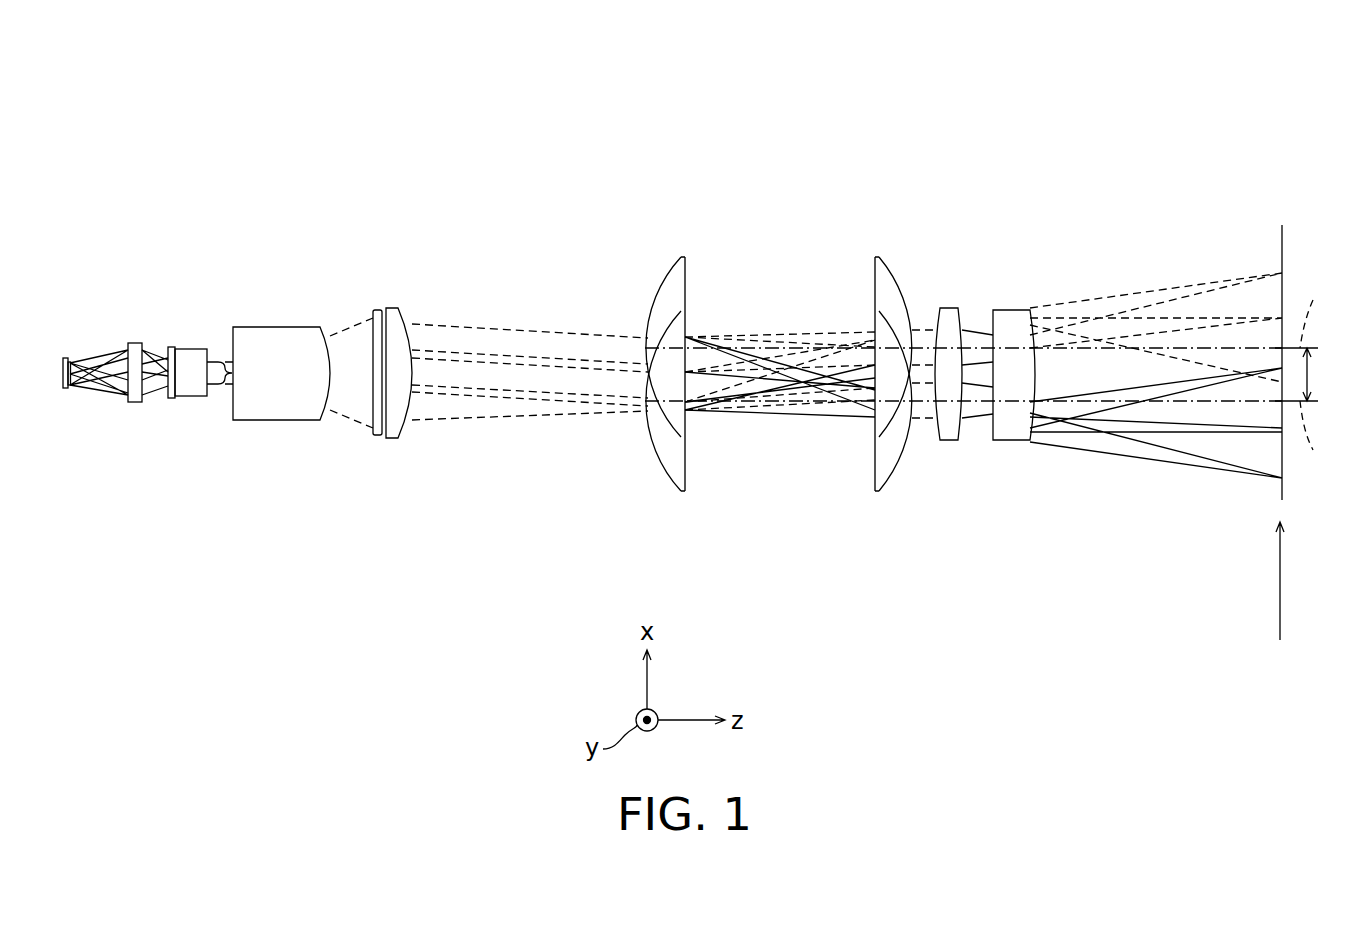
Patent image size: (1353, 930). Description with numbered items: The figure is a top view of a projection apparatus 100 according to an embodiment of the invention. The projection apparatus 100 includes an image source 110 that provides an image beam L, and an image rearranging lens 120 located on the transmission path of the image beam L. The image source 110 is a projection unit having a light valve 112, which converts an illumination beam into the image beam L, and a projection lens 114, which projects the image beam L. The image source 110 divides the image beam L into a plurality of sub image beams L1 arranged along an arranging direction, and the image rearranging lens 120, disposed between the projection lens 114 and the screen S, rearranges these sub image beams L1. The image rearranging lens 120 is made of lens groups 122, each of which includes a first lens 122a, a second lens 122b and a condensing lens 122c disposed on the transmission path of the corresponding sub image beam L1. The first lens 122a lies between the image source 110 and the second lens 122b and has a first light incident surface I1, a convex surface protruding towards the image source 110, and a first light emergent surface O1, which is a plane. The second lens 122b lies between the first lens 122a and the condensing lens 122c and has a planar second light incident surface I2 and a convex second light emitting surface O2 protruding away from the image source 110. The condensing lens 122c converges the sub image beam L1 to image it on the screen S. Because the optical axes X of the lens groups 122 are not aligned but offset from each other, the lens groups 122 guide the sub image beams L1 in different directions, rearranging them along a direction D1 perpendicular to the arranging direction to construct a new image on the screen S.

The projection apparatus 100 is at (1313, 697).
The image source 110 is at (248, 249).
The light valve 112 is at (68, 357).
The projection lens 114 is at (386, 309).
The image rearranging lens 120 is at (898, 80).
The lens group 122 is at (985, 170).
The first lens 122a is at (675, 280).
The second lens 122b is at (880, 260).
The condensing lens 122c is at (948, 306).
The image beam L is at (507, 246).
The sub image beam L1 is at (433, 327).
The first light incident surface I1 is at (661, 272).
The first light emergent surface O1 is at (697, 306).
The second light incident surface I2 is at (866, 275).
The second light emitting surface O2 is at (904, 273).
The screen S is at (1283, 250).
The optical axis X is at (1312, 375).
The direction D1 is at (1296, 581).